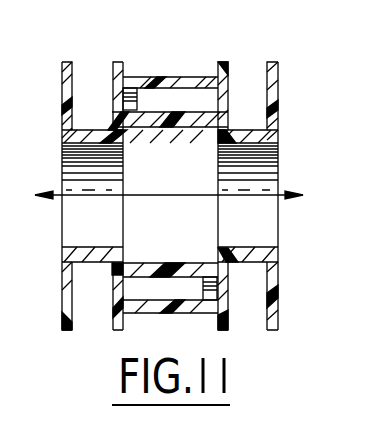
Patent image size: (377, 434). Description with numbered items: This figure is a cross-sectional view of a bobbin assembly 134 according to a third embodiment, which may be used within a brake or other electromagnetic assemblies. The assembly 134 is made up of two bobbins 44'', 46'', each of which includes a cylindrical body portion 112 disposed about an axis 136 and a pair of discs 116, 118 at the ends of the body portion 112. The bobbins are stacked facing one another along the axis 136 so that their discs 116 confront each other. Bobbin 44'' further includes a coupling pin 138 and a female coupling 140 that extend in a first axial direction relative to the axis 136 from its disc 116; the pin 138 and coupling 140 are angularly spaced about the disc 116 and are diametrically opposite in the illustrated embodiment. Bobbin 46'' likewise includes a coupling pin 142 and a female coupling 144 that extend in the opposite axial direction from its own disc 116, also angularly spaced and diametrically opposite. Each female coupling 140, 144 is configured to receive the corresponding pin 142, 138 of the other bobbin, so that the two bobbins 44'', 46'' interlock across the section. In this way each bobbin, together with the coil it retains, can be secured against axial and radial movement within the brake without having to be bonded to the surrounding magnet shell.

The bobbin assembly 134 is at (267, 50).
The disc 118 is at (67, 88).
The cylindrical body portion 112 is at (82, 137).
The coupling pin 142 is at (200, 92).
The female coupling 140 is at (133, 82).
The axis 136 is at (282, 193).
The bobbin 44'' is at (67, 238).
The bobbin 46'' is at (285, 238).
The disc 116 is at (113, 322).
The coupling pin 138 is at (140, 275).
The female coupling 144 is at (190, 312).